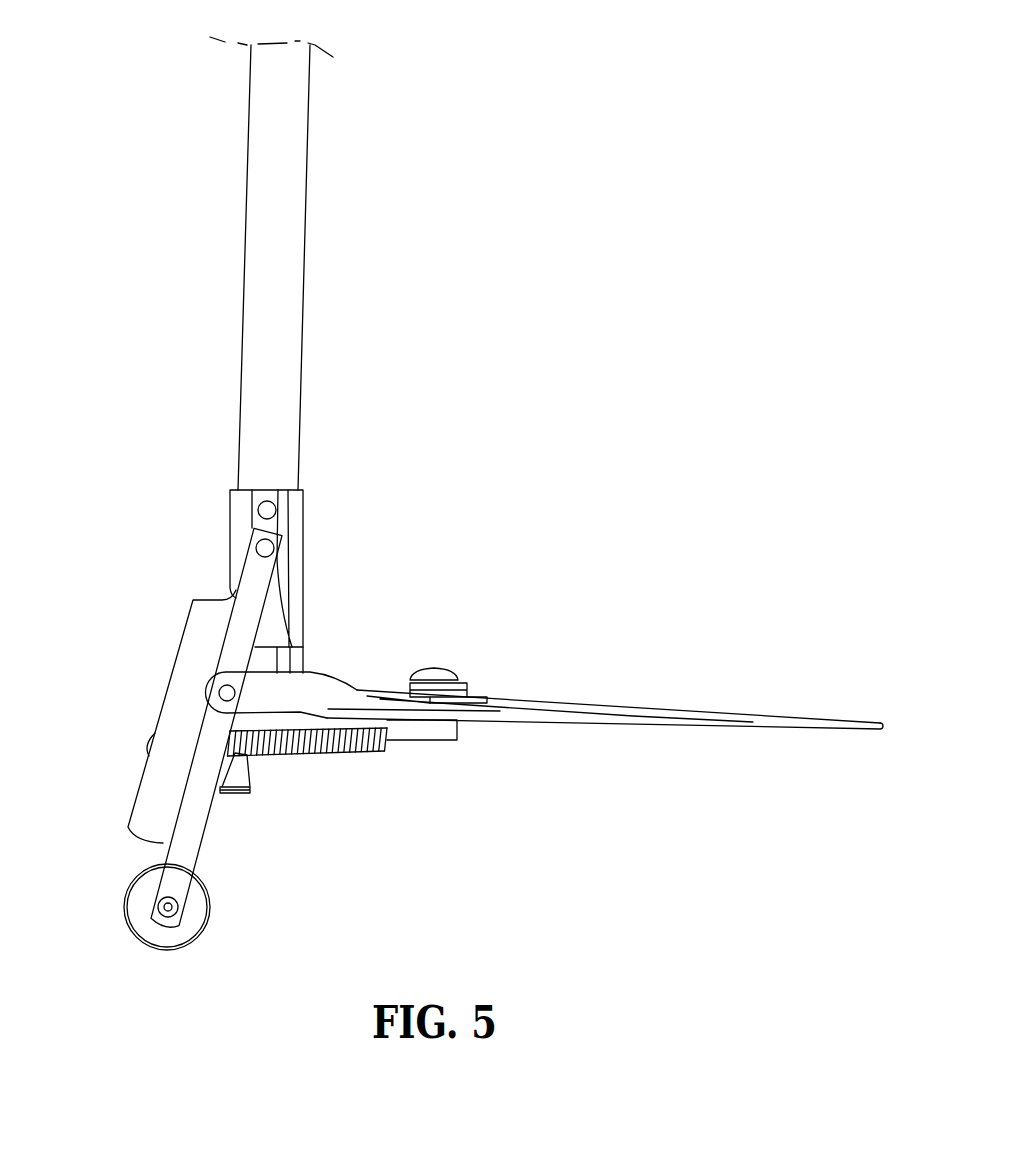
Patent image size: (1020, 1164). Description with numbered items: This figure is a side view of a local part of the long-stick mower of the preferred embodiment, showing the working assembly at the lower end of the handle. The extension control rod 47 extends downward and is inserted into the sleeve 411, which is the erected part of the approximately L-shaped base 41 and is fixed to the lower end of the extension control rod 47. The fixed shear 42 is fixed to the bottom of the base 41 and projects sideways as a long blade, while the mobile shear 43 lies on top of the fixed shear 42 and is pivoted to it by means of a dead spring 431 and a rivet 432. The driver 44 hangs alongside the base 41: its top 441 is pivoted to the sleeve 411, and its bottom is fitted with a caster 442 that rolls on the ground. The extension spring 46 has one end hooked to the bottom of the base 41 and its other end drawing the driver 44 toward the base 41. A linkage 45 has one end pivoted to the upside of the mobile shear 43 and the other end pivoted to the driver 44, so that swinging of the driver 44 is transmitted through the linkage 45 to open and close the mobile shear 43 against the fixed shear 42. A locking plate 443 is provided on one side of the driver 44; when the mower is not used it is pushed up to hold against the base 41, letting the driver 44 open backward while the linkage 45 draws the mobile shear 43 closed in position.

The extension control rod 47 is at (298, 249).
The sleeve 411 is at (238, 510).
The top of the driver 441 is at (257, 577).
The driver 44 is at (178, 688).
The caster 442 is at (137, 895).
The locking plate 443 is at (240, 773).
The extension spring 46 is at (320, 757).
The linkage 45 is at (308, 693).
The mobile shear 43 is at (502, 700).
The fixed shear 42 is at (820, 730).
The base 41 is at (443, 740).
The dead spring 431 is at (423, 670).
The rivet 432 is at (447, 677).